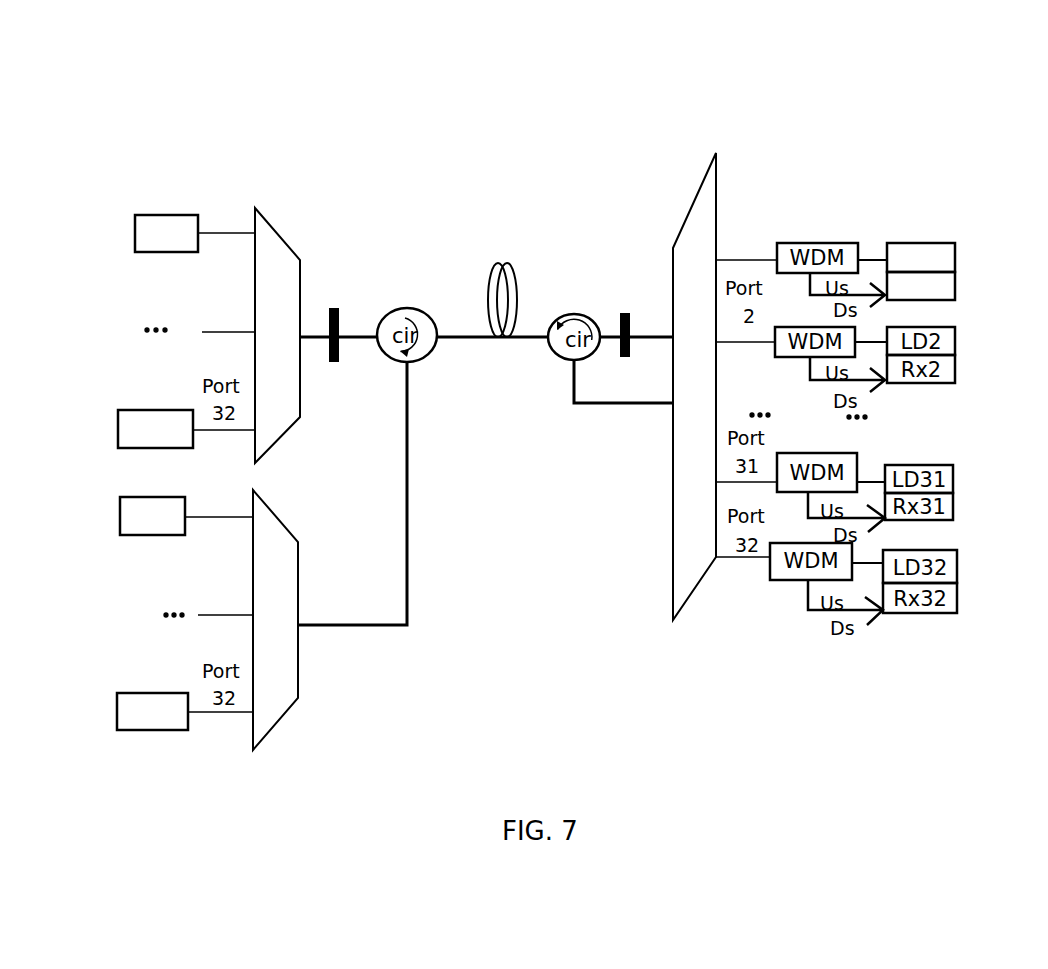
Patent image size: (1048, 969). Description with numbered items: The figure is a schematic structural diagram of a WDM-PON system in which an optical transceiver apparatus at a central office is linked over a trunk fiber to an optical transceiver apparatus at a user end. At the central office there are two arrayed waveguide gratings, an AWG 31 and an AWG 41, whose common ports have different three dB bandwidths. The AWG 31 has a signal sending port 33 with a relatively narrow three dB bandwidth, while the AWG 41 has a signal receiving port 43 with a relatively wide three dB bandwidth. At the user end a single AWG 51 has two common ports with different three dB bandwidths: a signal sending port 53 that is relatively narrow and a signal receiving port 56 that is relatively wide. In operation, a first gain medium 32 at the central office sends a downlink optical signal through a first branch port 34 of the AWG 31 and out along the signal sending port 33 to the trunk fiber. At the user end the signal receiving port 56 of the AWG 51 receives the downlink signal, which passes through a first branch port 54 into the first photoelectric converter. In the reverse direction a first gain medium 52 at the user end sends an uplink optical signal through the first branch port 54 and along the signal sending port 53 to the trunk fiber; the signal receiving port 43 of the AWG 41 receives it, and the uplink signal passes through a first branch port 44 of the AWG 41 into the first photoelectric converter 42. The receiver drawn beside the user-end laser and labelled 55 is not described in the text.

The AWG 31 is at (283, 237).
The first gain medium 32 is at (133, 227).
The signal sending port 33 is at (308, 333).
The first branch port 34 is at (212, 233).
The AWG 41 is at (273, 733).
The first photoelectric converter 42 is at (120, 515).
The signal receiving port 43 is at (408, 557).
The first branch port 44 is at (205, 517).
The AWG 51 is at (687, 213).
The first gain medium 52 is at (918, 243).
The signal sending port 53 is at (660, 332).
The first branch port 54 is at (770, 260).
The receiver 55 is at (955, 288).
The signal receiving port 56 is at (617, 407).